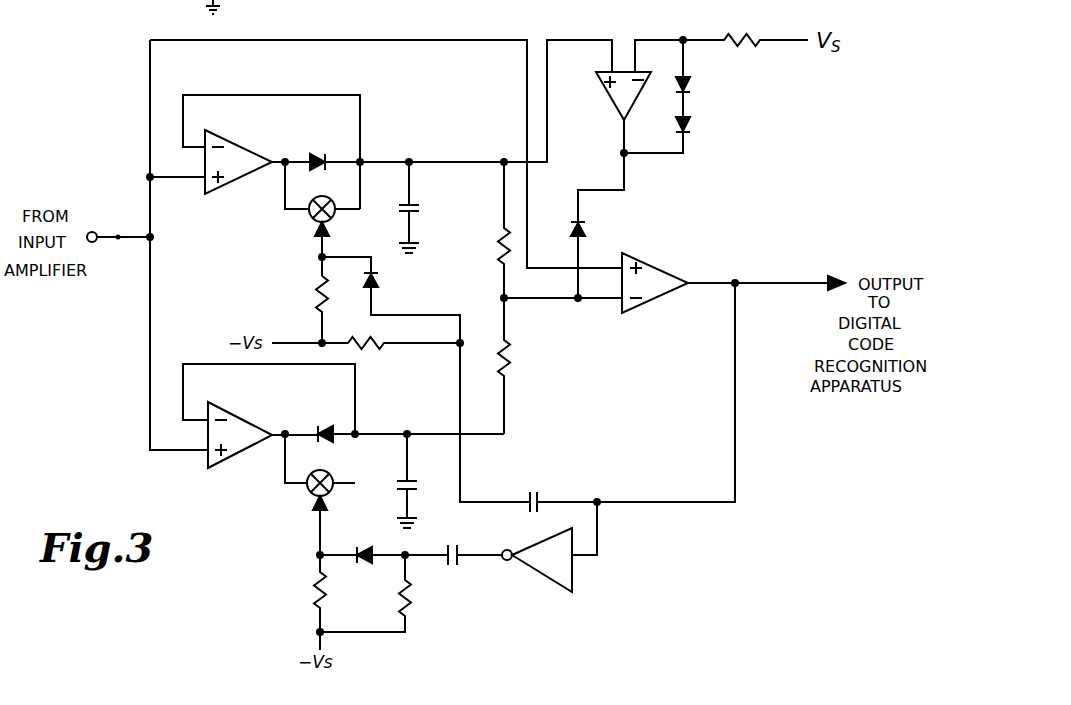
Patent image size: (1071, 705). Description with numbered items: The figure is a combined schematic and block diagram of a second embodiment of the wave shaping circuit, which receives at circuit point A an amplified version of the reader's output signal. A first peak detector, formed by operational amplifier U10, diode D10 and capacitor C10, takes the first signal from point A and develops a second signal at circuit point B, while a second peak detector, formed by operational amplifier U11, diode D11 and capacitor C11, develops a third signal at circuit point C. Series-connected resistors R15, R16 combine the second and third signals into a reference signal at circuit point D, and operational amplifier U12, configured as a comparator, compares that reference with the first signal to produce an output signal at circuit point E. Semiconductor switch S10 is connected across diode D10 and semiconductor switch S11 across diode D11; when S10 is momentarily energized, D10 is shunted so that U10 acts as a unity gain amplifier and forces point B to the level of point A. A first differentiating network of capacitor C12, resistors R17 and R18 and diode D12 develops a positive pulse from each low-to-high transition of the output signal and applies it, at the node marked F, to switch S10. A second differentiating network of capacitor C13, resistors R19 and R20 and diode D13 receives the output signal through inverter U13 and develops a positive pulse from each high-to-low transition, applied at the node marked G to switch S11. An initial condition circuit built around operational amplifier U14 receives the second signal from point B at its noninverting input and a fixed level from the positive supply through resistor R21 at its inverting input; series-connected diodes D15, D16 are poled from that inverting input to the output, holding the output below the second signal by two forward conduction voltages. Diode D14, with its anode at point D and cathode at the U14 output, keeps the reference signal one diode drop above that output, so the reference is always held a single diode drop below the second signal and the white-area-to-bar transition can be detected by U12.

The operational amplifier U10 is at (240, 138).
The operational amplifier U11 is at (242, 412).
The operational amplifier U12 is at (666, 260).
The inverter U13 is at (550, 588).
The operational amplifier U14 is at (606, 98).
The diode D10 is at (320, 152).
The diode D11 is at (326, 424).
The diode D12 is at (382, 279).
The diode D13 is at (362, 548).
The diode D14 is at (586, 230).
The diode D15 is at (694, 86).
The diode D16 is at (694, 128).
The semiconductor switch S10 is at (310, 228).
The semiconductor switch S11 is at (330, 494).
The resistor R15 is at (498, 248).
The resistor R16 is at (510, 366).
The resistor R17 is at (314, 292).
The resistor R18 is at (370, 350).
The resistor R19 is at (312, 588).
The resistor R20 is at (412, 608).
The resistor R21 is at (748, 36).
The capacitor C10 is at (420, 208).
The capacitor C11 is at (418, 484).
The capacitor C12 is at (534, 490).
The capacitor C13 is at (474, 540).
The circuit point A is at (118, 235).
The circuit point B is at (362, 161).
The circuit point C is at (357, 433).
The circuit point D is at (505, 300).
The circuit point E is at (736, 281).
The circuit point F is at (324, 257).
The circuit point G is at (318, 555).